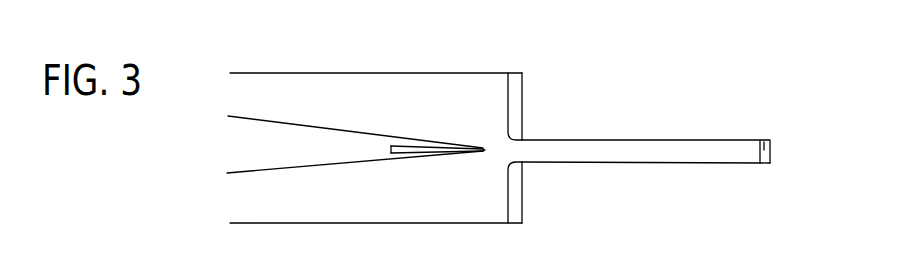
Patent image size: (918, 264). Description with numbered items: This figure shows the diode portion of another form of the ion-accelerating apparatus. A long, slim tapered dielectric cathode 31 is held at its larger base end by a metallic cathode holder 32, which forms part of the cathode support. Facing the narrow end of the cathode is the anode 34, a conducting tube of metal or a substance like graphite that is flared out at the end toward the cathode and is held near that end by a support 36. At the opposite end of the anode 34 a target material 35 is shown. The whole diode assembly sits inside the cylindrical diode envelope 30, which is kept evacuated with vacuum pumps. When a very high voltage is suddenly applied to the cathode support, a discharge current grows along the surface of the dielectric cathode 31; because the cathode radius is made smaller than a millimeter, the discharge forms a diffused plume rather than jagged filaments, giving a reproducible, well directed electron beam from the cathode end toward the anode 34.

The cylindrical diode envelope 30 is at (373, 73).
The tapered dielectric cathode 31 is at (432, 143).
The metallic cathode holder 32 is at (284, 122).
The anode 34 is at (607, 140).
The target material 35 is at (765, 140).
The support 36 is at (522, 108).